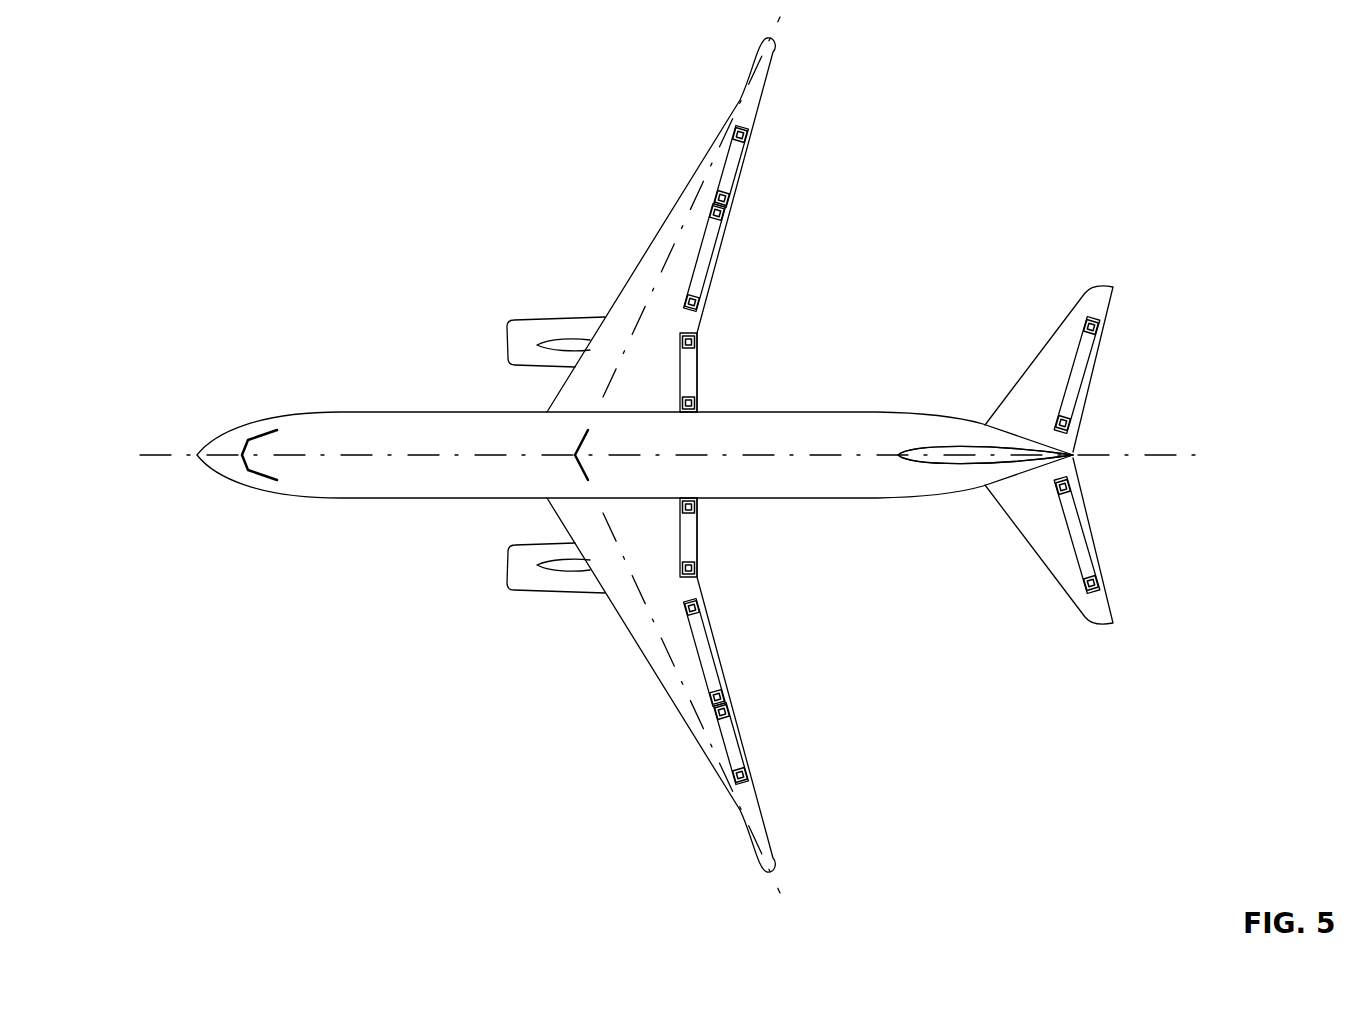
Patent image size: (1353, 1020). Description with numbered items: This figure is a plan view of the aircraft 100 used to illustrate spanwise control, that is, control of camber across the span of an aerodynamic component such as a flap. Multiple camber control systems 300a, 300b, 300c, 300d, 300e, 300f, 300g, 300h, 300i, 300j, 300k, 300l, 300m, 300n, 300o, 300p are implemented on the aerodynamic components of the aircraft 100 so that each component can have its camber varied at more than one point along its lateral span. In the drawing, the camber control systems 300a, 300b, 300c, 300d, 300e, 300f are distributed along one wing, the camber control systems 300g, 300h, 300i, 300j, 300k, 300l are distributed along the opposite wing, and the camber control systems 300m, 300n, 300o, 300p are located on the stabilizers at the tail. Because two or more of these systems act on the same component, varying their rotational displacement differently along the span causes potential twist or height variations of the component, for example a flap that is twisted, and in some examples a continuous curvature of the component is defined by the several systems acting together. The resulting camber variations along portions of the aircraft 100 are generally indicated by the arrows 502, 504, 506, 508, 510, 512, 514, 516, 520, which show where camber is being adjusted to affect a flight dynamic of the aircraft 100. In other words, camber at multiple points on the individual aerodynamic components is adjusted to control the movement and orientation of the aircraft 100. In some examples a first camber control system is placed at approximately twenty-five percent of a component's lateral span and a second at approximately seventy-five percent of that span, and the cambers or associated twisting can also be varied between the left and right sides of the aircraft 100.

The aircraft 100 is at (1120, 104).
The camber control system 300a is at (735, 128).
The camber control system 300b is at (718, 192).
The camber control system 300c is at (713, 212).
The camber control system 300d is at (689, 299).
The camber control system 300e is at (682, 335).
The camber control system 300f is at (680, 397).
The camber control system 300g is at (645, 532).
The camber control system 300h is at (643, 602).
The camber control system 300i is at (655, 637).
The camber control system 300j is at (678, 727).
The camber control system 300k is at (683, 747).
The camber control system 300l is at (705, 805).
The camber control system 300m is at (1060, 295).
The camber control system 300n is at (1035, 370).
The camber control system 300o is at (1033, 532).
The camber control system 300p is at (1060, 615).
The arrow 502 is at (753, 138).
The arrow 504 is at (728, 223).
The arrow 506 is at (698, 342).
The arrow 508 is at (700, 502).
The arrow 510 is at (702, 598).
The arrow 512 is at (733, 705).
The arrow 514 is at (1107, 338).
The arrow 516 is at (1080, 492).
The arrow 520 is at (1062, 454).